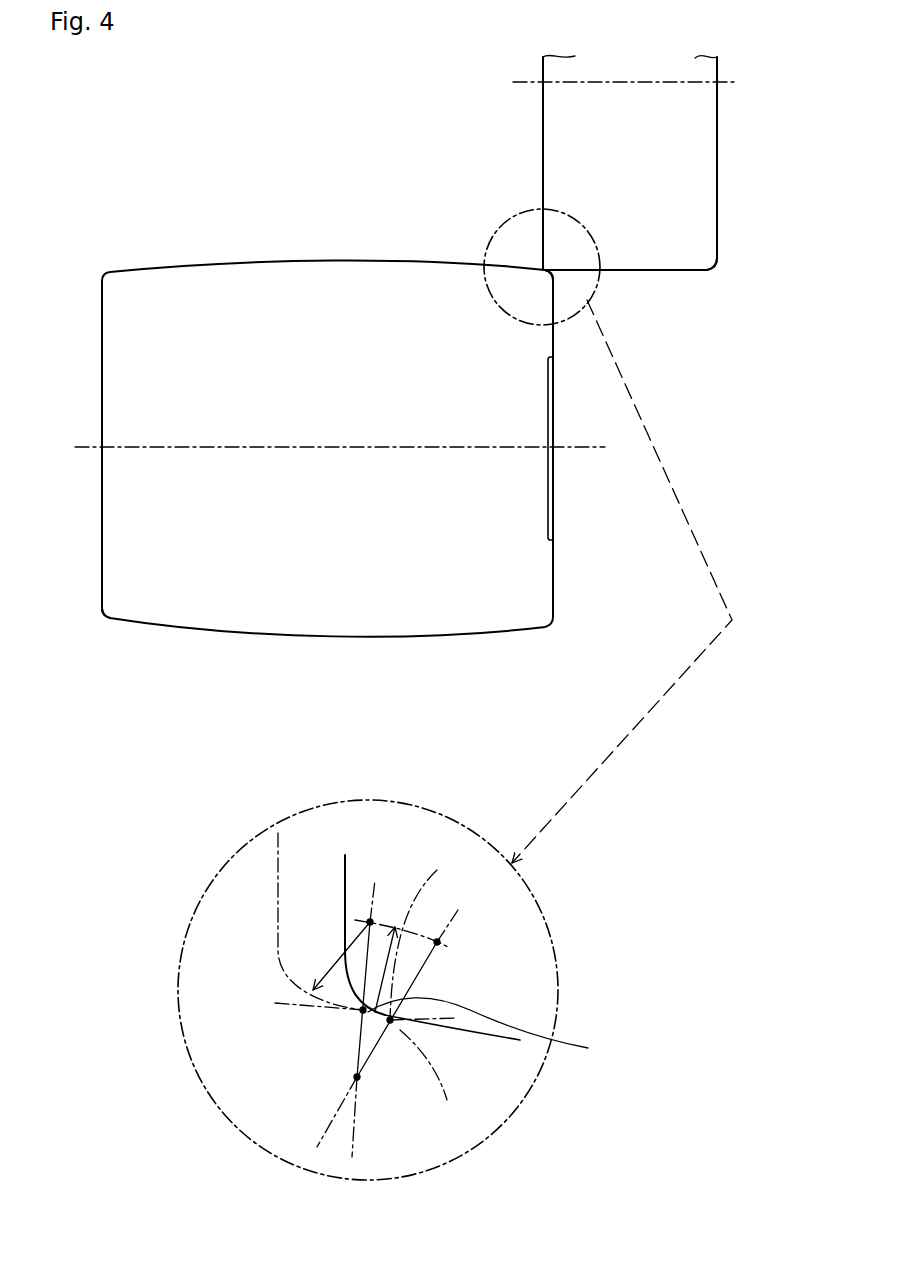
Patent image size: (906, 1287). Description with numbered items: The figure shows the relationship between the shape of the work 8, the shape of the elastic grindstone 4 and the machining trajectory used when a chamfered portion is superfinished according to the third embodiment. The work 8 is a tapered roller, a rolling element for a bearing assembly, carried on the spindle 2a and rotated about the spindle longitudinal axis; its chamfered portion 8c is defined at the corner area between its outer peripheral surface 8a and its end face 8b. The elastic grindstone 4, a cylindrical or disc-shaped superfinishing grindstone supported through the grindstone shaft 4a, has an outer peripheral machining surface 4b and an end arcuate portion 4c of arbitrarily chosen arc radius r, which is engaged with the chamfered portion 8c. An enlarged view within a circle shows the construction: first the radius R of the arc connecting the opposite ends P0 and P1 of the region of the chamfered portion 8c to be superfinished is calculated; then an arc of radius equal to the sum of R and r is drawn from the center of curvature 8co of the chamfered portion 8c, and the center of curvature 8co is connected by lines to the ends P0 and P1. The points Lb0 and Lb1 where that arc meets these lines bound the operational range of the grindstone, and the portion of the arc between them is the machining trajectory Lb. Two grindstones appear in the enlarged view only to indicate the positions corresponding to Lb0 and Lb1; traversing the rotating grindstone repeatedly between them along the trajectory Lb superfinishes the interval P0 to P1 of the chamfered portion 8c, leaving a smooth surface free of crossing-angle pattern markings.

The elastic grindstone 4 is at (712, 190).
The grindstone shaft 4a is at (742, 82).
The machining surface 4b is at (663, 272).
The end arcuate portion 4c is at (720, 270).
The work 8 is at (177, 606).
The outer peripheral surface 8a is at (324, 637).
The end face 8b is at (102, 357).
The chamfered portion 8c is at (548, 270).
The center of curvature 8co is at (358, 1080).
The spindle 2a is at (88, 448).
The end of machined region P0 is at (398, 1040).
The end of machined region P1 is at (347, 1021).
The machining trajectory Lb is at (431, 936).
The intersection point Lb0 is at (437, 942).
The intersection point Lb1 is at (372, 917).
The arc radius r is at (330, 966).
The radius of arc R is at (357, 1053).